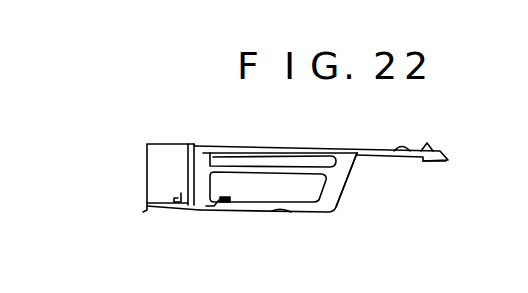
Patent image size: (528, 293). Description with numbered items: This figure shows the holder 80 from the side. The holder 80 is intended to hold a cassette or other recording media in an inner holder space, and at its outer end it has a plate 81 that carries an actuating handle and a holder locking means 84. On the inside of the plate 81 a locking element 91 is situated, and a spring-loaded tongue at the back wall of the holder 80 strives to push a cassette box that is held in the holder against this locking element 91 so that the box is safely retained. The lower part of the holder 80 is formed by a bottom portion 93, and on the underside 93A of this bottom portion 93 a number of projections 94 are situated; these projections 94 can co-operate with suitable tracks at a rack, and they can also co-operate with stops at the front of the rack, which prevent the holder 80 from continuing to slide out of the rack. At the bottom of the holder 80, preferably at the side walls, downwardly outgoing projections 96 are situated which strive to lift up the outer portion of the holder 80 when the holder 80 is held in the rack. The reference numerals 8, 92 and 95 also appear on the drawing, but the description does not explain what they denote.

The holder 80 is at (194, 133).
The holder locking means 84 is at (401, 148).
The terminal tab 8 is at (432, 148).
The plate 81 is at (375, 158).
The locking element 91 is at (428, 161).
The bottom portion 93 is at (148, 207).
The underside 93A is at (143, 221).
The projections 94 is at (183, 209).
The latch 92 is at (222, 208).
The downwardly outgoing projections 96 is at (281, 213).
The base 95 is at (385, 285).